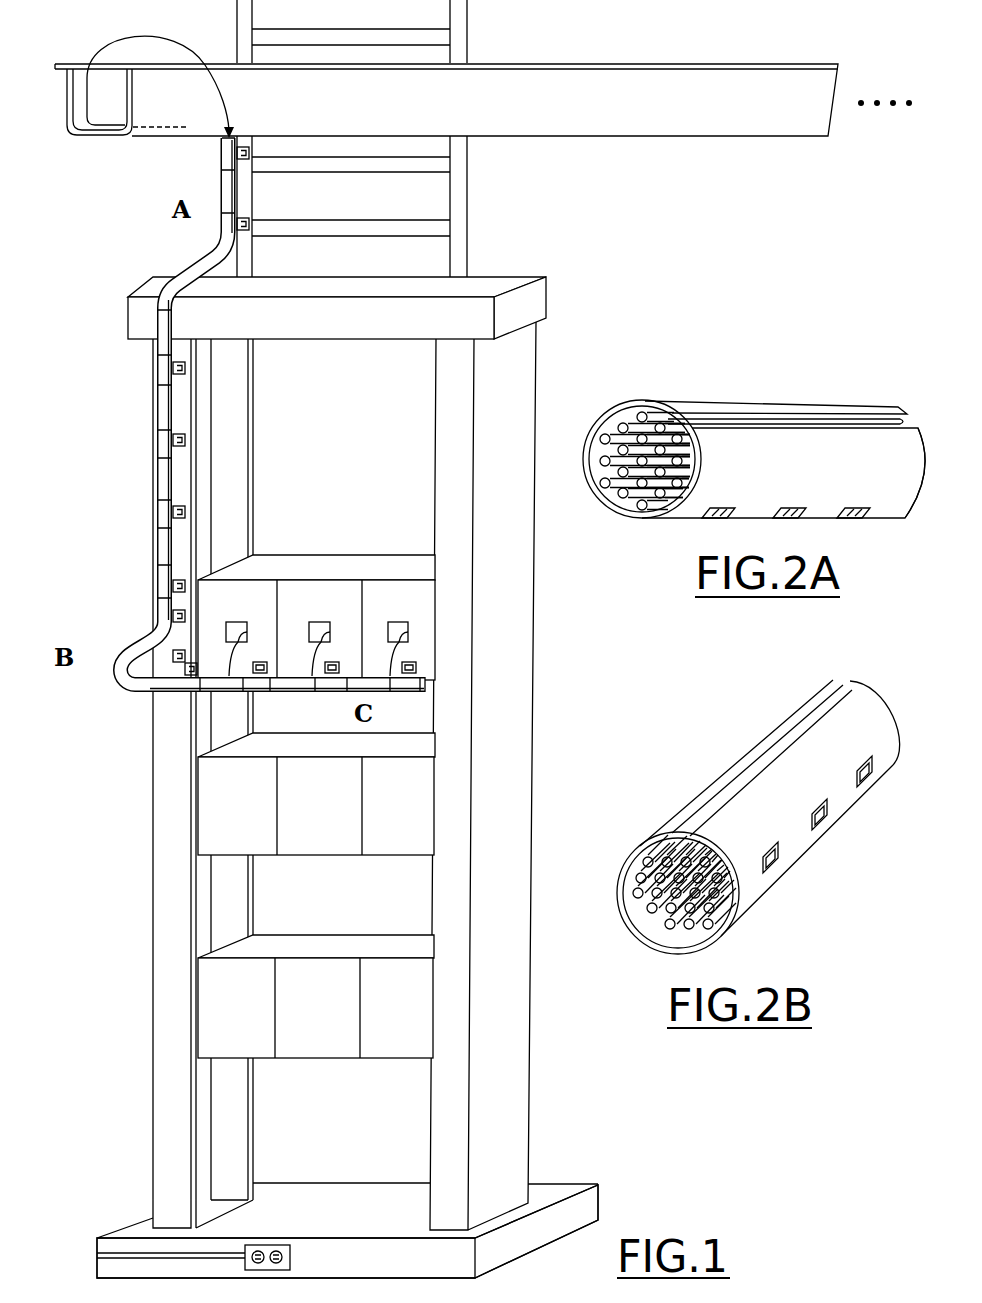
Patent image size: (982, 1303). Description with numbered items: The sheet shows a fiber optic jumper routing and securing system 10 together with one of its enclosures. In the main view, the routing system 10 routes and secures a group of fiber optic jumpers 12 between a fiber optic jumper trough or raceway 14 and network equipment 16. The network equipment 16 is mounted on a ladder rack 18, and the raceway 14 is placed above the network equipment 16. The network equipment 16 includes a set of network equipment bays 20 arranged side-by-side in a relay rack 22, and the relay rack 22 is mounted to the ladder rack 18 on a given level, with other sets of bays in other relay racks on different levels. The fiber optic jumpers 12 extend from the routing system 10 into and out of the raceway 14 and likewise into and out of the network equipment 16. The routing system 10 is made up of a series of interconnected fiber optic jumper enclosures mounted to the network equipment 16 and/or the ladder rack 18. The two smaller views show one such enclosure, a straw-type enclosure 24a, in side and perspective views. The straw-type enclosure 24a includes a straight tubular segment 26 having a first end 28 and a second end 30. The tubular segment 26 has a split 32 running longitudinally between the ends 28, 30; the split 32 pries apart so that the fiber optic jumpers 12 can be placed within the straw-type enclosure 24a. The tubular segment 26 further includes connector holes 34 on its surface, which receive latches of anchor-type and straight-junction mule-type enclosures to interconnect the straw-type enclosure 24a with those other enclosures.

In FIG. 1, the fiber optic jumper routing and securing system 10 is at (125, 397).
In FIG. 1, the fiber optic jumpers 12 is at (137, 34).
In FIG. 2A, the fiber optic jumpers 12 is at (660, 493).
In FIG. 2B, the fiber optic jumpers 12 is at (720, 920).
In FIG. 1, the fiber optic jumper trough 14 is at (513, 66).
In FIG. 1, the network equipment 16 is at (341, 575).
In FIG. 1, the ladder rack 18 is at (452, 215).
In FIG. 1, the network equipment bays 20 is at (321, 631).
In FIG. 1, the relay rack 22 is at (445, 588).
In FIG. 2A, the straw-type enclosure 24a is at (760, 425).
In FIG. 2B, the straw-type enclosure 24a is at (775, 787).
In FIG. 2A, the straight tubular segment 26 is at (815, 518).
In FIG. 2B, the straight tubular segment 26 is at (827, 833).
In FIG. 2A, the first end 28 is at (610, 420).
In FIG. 2A, the second end 30 is at (928, 442).
In FIG. 2A, the split 32 is at (700, 418).
In FIG. 2B, the split 32 is at (843, 690).
In FIG. 2A, the connector holes 34 is at (783, 517).